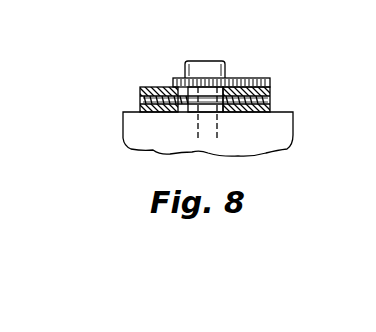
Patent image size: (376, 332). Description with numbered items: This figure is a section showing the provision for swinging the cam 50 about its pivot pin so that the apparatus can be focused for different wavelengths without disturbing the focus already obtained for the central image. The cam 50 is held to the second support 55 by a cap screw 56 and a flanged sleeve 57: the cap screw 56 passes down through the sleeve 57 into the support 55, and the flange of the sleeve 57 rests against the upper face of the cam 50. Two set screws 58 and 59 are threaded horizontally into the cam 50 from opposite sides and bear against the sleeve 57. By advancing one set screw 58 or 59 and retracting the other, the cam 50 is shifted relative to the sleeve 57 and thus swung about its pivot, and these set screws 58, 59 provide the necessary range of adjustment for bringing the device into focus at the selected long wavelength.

The cam 50 is at (157, 87).
The second support 55 is at (294, 112).
The cap screw 56 is at (226, 70).
The flanged sleeve 57 is at (234, 79).
The set screw 58 is at (140, 101).
The set screw 59 is at (271, 97).